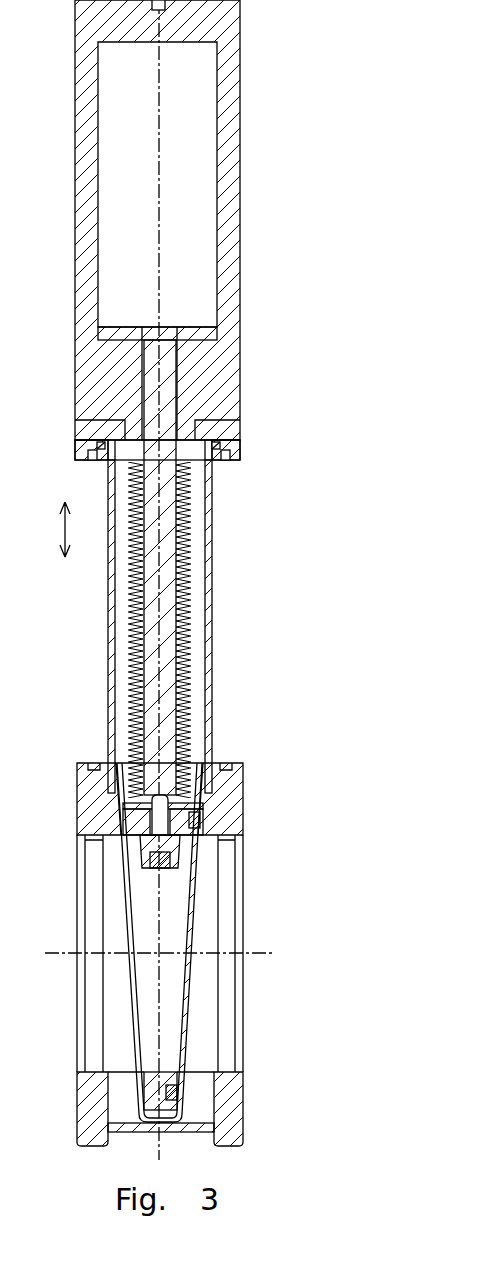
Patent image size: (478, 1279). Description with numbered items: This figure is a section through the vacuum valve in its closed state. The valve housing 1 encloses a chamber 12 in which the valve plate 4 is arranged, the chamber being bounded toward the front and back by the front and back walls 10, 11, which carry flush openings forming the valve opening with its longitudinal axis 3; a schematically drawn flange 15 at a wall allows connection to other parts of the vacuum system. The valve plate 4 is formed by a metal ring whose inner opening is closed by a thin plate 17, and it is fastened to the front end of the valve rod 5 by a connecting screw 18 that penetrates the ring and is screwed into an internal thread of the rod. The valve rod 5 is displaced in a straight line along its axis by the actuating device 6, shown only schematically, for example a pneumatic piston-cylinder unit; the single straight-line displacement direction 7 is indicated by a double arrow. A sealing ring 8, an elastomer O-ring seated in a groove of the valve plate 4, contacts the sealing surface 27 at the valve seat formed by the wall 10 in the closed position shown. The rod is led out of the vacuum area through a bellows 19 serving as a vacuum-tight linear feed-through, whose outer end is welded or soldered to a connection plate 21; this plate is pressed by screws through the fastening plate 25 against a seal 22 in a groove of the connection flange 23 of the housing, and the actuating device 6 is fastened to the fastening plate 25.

The valve housing 1 is at (209, 626).
The longitudinal axis 3 is at (60, 957).
The valve plate 4 is at (198, 1008).
The valve rod 5 is at (163, 527).
The actuating device 6 is at (258, 191).
The displacement direction 7 is at (62, 527).
The sealing ring 8 is at (170, 1097).
The front wall 10 is at (202, 790).
The back wall 11 is at (118, 792).
The chamber 12 is at (200, 678).
The flange 15 is at (223, 1123).
The thin plate 17 is at (188, 923).
The connecting screw 18 is at (150, 827).
The spring 19 is at (130, 637).
The connection plate 21 is at (238, 443).
The seal 22 is at (221, 452).
The connection flange 23 is at (243, 453).
The fastening plate 25 is at (90, 430).
The sealing surface 27 is at (197, 835).